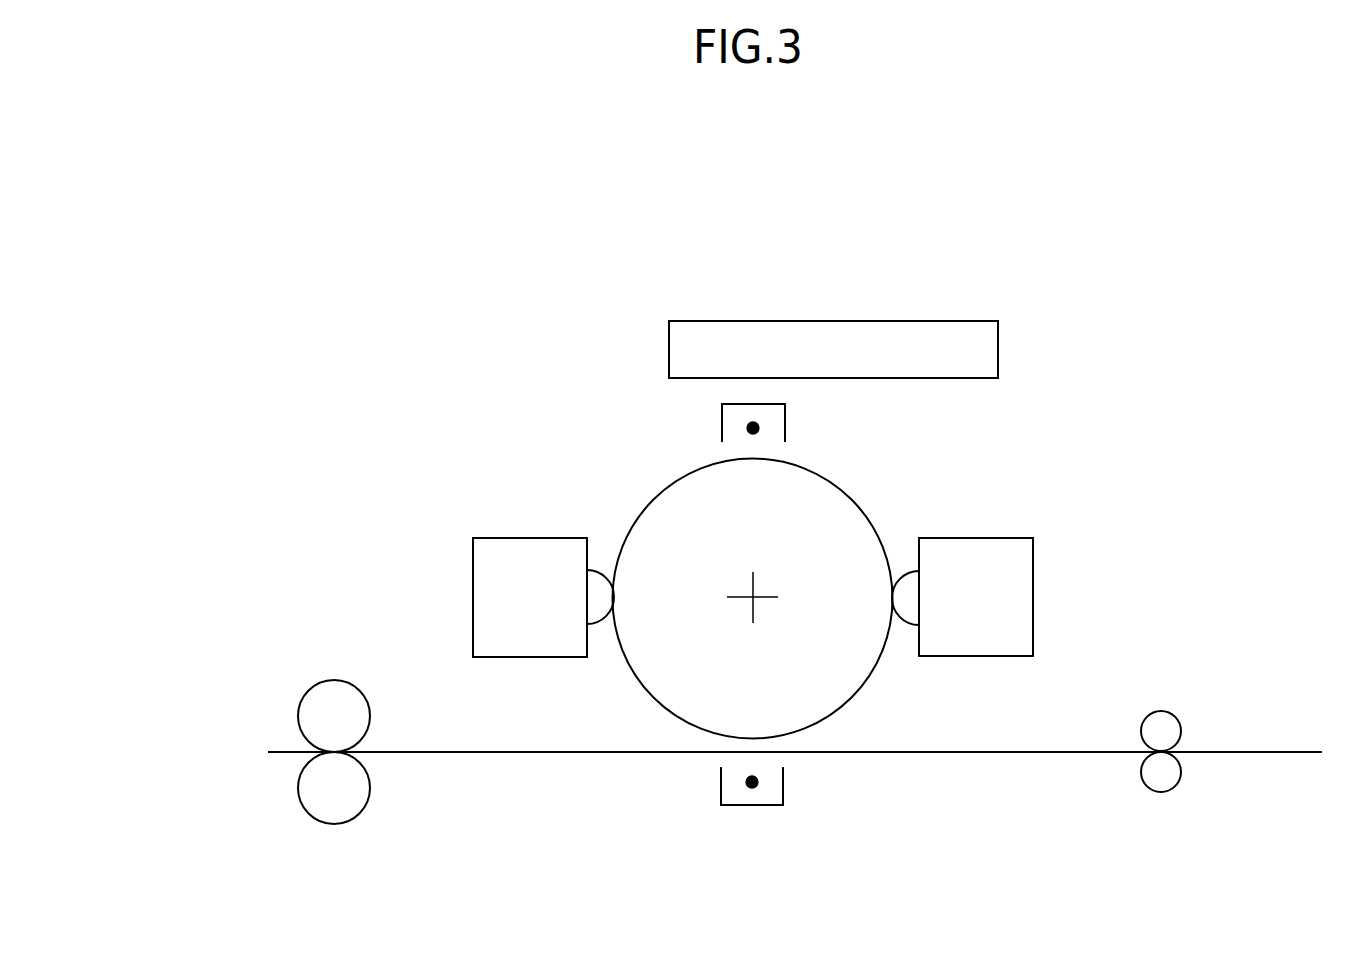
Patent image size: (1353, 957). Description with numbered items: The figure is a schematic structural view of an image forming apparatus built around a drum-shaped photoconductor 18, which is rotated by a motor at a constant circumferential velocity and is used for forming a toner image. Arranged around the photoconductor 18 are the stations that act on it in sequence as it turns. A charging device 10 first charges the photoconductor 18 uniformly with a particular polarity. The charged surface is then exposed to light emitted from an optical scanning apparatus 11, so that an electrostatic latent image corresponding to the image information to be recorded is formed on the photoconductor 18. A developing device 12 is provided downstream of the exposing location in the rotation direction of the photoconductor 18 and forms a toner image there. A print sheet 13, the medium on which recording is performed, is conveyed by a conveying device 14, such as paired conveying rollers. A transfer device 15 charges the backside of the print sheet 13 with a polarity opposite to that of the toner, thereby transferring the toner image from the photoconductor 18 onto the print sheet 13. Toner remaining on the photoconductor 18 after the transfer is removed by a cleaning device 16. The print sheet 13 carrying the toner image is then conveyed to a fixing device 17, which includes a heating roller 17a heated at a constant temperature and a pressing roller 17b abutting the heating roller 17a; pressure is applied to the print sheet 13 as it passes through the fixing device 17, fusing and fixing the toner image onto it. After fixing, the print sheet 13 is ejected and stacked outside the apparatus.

The charging device 10 is at (722, 423).
The optical scanning apparatus 11 is at (852, 478).
The developing device 12 is at (953, 538).
The print sheet 13 is at (1238, 752).
The conveying device 14 is at (1155, 777).
The transfer device 15 is at (762, 798).
The cleaning device 16 is at (473, 597).
The fixing device 17 is at (256, 734).
The heating roller 17a is at (299, 715).
The pressing roller 17b is at (310, 813).
The photoconductor 18 is at (652, 500).